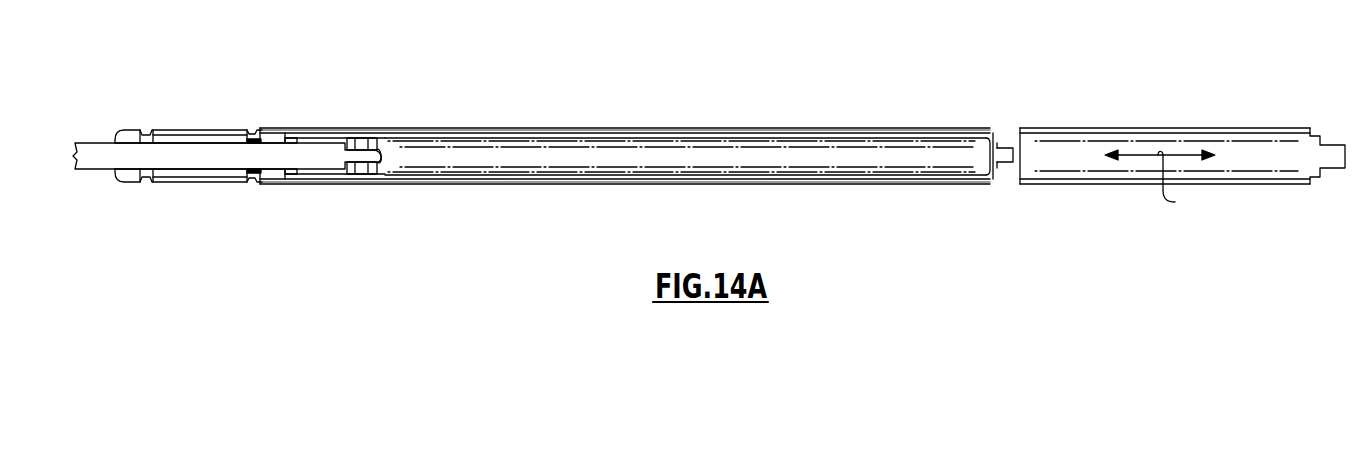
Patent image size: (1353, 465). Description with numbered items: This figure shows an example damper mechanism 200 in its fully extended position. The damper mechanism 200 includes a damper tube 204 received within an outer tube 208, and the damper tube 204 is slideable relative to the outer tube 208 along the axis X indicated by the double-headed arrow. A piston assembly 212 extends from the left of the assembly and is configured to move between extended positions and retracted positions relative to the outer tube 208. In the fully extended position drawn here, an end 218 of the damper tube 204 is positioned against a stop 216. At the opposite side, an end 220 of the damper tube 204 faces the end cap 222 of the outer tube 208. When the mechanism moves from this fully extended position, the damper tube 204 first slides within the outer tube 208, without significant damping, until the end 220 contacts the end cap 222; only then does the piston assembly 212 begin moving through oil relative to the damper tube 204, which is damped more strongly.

The damper mechanism 200 is at (1098, 78).
The damper tube 204 is at (757, 130).
The outer tube 208 is at (912, 130).
The piston assembly 212 is at (100, 143).
The stop 216 is at (249, 130).
The end 218 is at (273, 143).
The end 220 is at (1010, 138).
The end cap 222 is at (1331, 103).